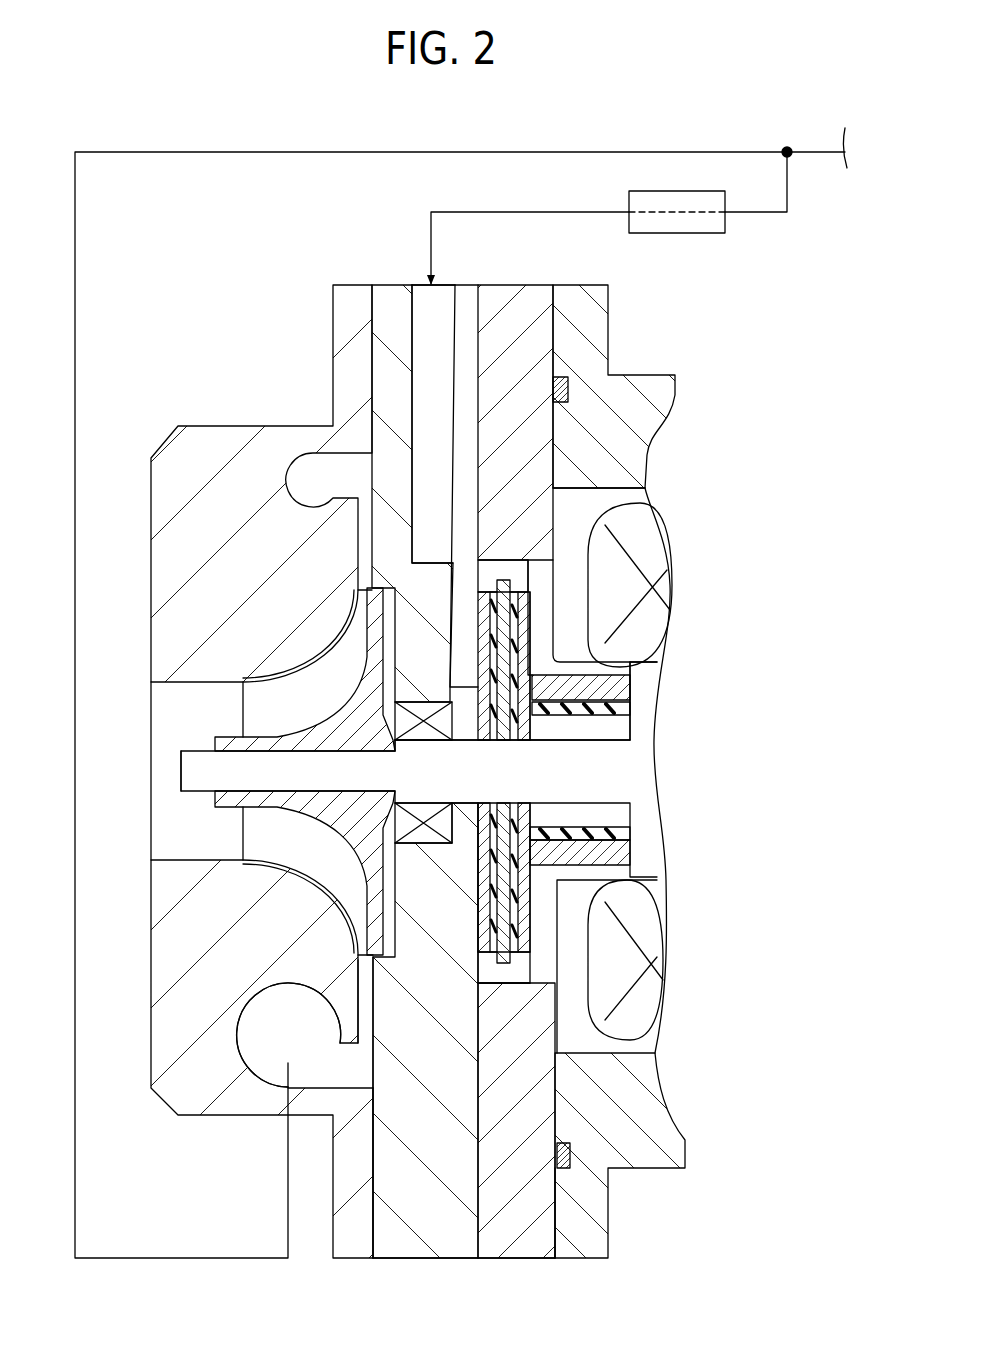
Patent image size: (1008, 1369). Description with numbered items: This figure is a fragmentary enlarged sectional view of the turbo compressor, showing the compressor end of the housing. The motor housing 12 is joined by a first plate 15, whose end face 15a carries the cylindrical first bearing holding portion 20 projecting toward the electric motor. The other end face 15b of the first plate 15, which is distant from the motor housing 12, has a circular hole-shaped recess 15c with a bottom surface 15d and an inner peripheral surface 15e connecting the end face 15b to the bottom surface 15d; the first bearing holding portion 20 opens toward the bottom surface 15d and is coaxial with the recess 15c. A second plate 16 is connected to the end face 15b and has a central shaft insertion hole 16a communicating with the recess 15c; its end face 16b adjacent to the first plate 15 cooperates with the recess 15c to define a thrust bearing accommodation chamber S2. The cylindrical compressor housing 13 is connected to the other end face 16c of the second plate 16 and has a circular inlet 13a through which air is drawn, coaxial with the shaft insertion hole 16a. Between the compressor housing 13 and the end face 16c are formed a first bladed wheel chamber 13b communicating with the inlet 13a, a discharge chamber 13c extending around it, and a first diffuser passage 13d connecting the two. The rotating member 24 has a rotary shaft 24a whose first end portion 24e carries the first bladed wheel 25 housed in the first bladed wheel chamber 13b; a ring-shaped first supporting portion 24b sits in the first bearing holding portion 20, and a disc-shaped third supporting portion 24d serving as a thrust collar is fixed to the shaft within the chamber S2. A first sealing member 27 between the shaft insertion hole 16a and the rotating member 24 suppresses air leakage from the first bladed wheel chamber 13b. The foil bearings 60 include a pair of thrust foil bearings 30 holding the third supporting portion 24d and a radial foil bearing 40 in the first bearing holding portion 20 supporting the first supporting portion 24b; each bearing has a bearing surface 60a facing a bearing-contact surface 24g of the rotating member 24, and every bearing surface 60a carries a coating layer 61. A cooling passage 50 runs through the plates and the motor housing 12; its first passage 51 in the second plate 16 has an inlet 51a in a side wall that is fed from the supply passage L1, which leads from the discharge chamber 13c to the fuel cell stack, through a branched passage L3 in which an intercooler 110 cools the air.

The motor housing 12 is at (578, 294).
The compressor housing 13 is at (203, 430).
The inlet 13a is at (168, 680).
The first bladed wheel chamber 13b is at (300, 713).
The discharge chamber 13c is at (316, 1048).
The first diffuser passage 13d is at (348, 1003).
The first plate 15 is at (508, 297).
The end face 15a is at (560, 1225).
The other end face 15b is at (478, 1250).
The recess 15c is at (490, 556).
The bottom surface 15d is at (515, 975).
The inner peripheral surface 15e is at (497, 975).
The second plate 16 is at (386, 284).
The shaft insertion hole 16a is at (430, 846).
The end face 16b is at (478, 1262).
The other end face 16c is at (373, 1217).
The first bearing holding portion 20 is at (627, 870).
The rotating member 24 is at (655, 753).
The rotary shaft 24a is at (655, 779).
The first supporting portion 24b is at (657, 810).
The third supporting portion 24d is at (513, 742).
The first end portion 24e is at (181, 770).
The bearing-contact surface 24g is at (540, 933).
The first bladed wheel 25 is at (313, 812).
The first sealing member 27 is at (430, 732).
The thrust foil bearing 30 is at (592, 1005).
The radial foil bearing 40 is at (642, 688).
The cooling passage 50 is at (418, 280).
The first passage 51 is at (422, 312).
The inlet 51a is at (445, 298).
The foil bearing 60 is at (594, 816).
The bearing surface 60a is at (480, 676).
The coating layer 61 is at (482, 600).
The intercooler 110 is at (712, 233).
The supply passage L1 is at (460, 152).
The branched passage L3 is at (792, 205).
The thrust bearing accommodation chamber S2 is at (648, 492).